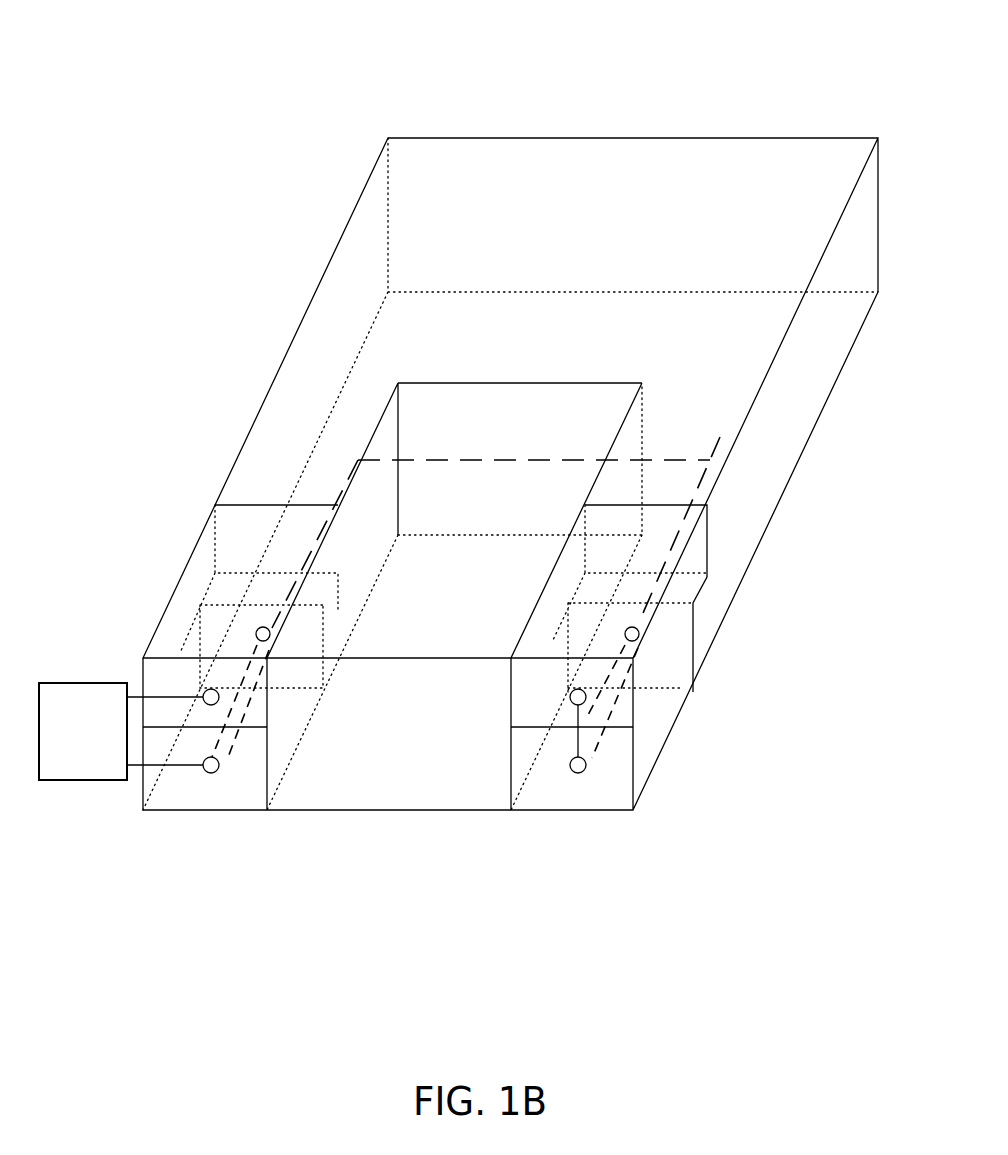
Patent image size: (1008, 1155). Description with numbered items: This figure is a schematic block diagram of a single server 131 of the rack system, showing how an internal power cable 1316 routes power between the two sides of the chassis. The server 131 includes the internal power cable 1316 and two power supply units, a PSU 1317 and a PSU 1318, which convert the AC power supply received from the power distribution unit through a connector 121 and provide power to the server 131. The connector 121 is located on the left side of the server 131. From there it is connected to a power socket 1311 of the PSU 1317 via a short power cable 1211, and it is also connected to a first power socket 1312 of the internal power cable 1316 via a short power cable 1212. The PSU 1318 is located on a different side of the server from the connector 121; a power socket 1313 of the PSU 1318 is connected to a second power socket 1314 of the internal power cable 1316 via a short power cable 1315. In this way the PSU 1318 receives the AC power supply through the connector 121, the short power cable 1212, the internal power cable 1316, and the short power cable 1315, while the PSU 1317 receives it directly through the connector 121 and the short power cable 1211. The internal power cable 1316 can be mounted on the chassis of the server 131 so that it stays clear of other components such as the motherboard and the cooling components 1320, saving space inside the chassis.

The server 131 is at (790, 80).
The connector 121 is at (92, 708).
The short power cable 1211 is at (177, 695).
The short power cable 1212 is at (177, 768).
The power socket 1311 is at (220, 702).
The first power socket 1312 is at (218, 770).
The power socket 1313 is at (587, 720).
The second power socket 1314 is at (578, 773).
The short power cable 1315 is at (575, 733).
The internal power cable 1316 is at (687, 460).
The PSU 1317 is at (192, 582).
The PSU 1318 is at (695, 598).
The cooling components 1320 is at (373, 782).